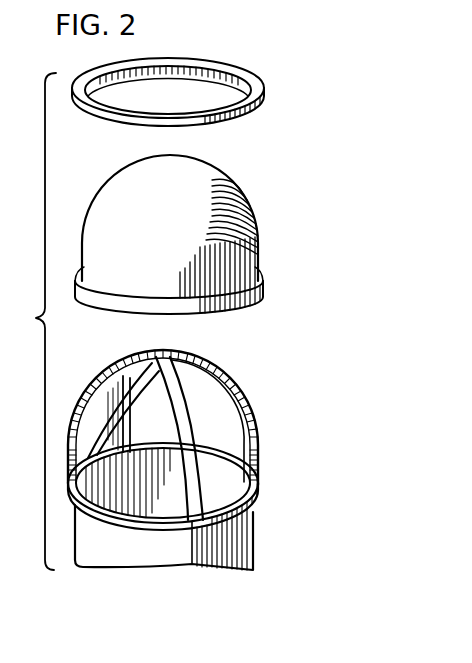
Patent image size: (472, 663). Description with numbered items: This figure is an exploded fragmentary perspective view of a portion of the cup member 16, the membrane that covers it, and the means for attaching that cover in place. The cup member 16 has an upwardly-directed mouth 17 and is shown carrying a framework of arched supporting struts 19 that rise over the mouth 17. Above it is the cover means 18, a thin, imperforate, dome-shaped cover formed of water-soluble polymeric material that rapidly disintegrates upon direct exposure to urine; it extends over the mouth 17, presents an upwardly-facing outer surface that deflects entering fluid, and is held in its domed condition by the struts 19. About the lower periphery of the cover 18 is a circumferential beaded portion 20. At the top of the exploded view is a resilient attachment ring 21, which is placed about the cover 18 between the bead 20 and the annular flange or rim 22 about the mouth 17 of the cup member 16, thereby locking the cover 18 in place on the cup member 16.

The cup member 16 is at (158, 553).
The mouth 17 is at (157, 497).
The cover means 18 is at (202, 175).
The arched supporting struts 19 is at (193, 402).
The circumferential beaded portion 20 is at (102, 300).
The resilient attachment ring 21 is at (218, 68).
The annular flange or rim 22 is at (253, 503).